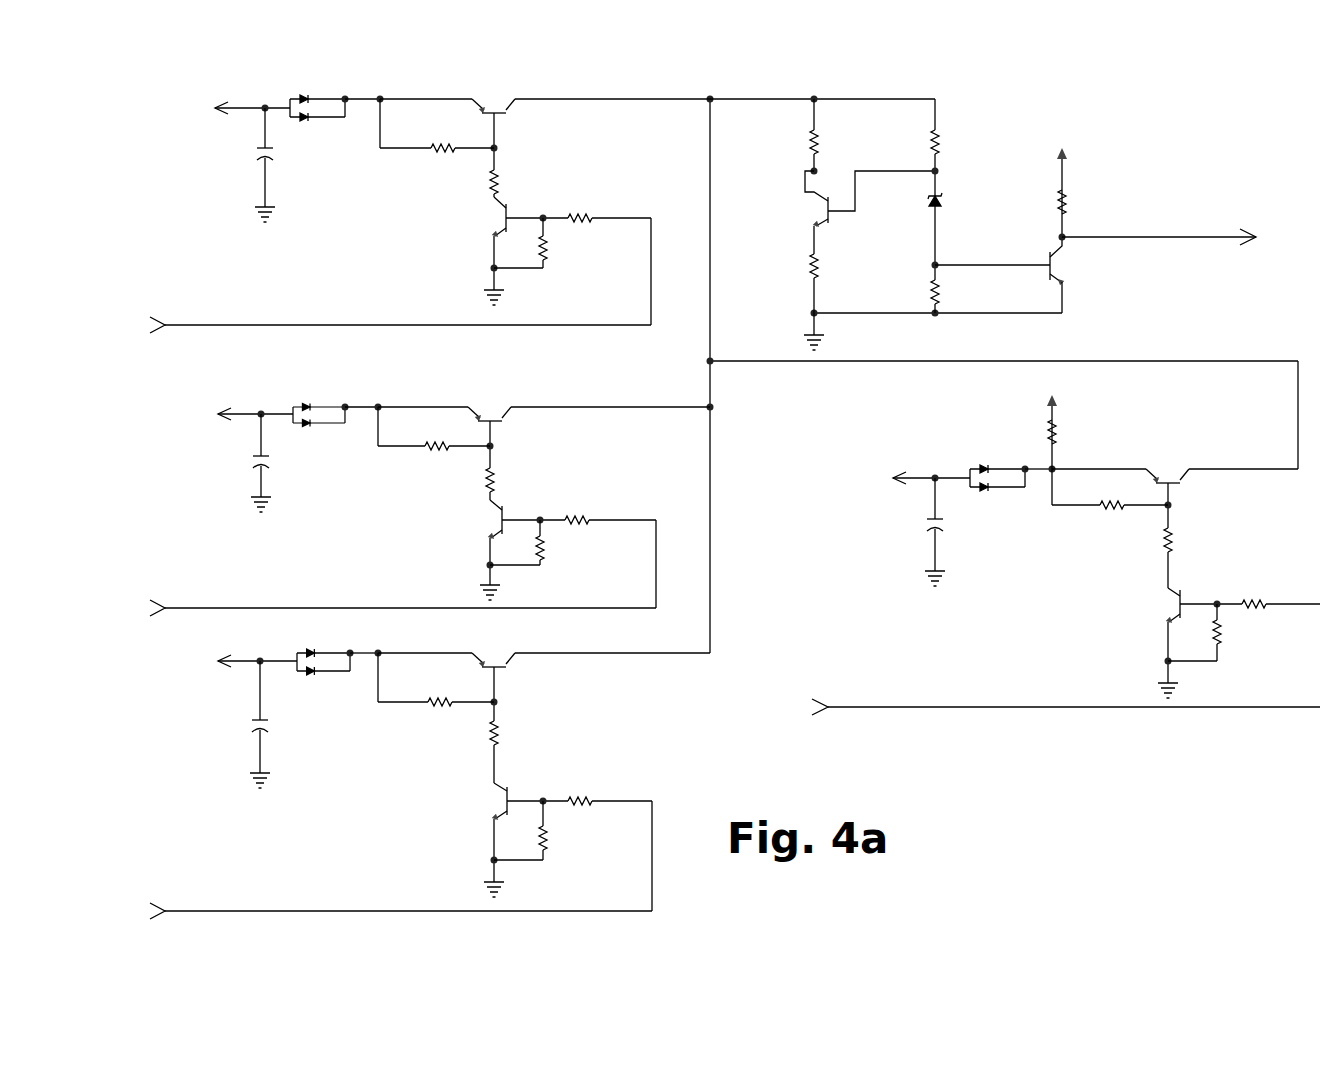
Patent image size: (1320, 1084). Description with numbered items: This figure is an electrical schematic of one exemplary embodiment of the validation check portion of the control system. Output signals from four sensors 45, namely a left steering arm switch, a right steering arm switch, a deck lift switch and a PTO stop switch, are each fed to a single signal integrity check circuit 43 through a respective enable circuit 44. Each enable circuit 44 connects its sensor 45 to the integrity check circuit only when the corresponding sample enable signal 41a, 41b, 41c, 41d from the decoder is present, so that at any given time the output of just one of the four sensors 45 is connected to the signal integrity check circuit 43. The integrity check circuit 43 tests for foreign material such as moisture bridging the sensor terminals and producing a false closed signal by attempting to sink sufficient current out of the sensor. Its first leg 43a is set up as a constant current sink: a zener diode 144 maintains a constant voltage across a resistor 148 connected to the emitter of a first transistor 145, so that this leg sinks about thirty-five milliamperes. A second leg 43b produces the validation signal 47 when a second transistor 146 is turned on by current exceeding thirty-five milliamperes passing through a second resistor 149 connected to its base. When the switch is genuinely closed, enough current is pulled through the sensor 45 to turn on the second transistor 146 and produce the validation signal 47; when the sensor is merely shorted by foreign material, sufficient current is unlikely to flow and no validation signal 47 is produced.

The sample enable signal 41a is at (258, 325).
The sample enable signal 41b is at (222, 608).
The sample enable signal 41c is at (277, 911).
The sample enable signal 41d is at (990, 708).
The signal integrity check circuit 43 is at (983, 219).
The first leg 43a is at (843, 206).
The second leg 43b is at (931, 206).
The enable circuit 44 is at (556, 182).
The sensor 45 is at (224, 104).
The validation signal 47 is at (1160, 237).
The zener diode 144 is at (930, 204).
The first transistor 145 is at (822, 219).
The second transistor 146 is at (1062, 275).
The resistor 148 is at (812, 266).
The second resistor 149 is at (930, 292).